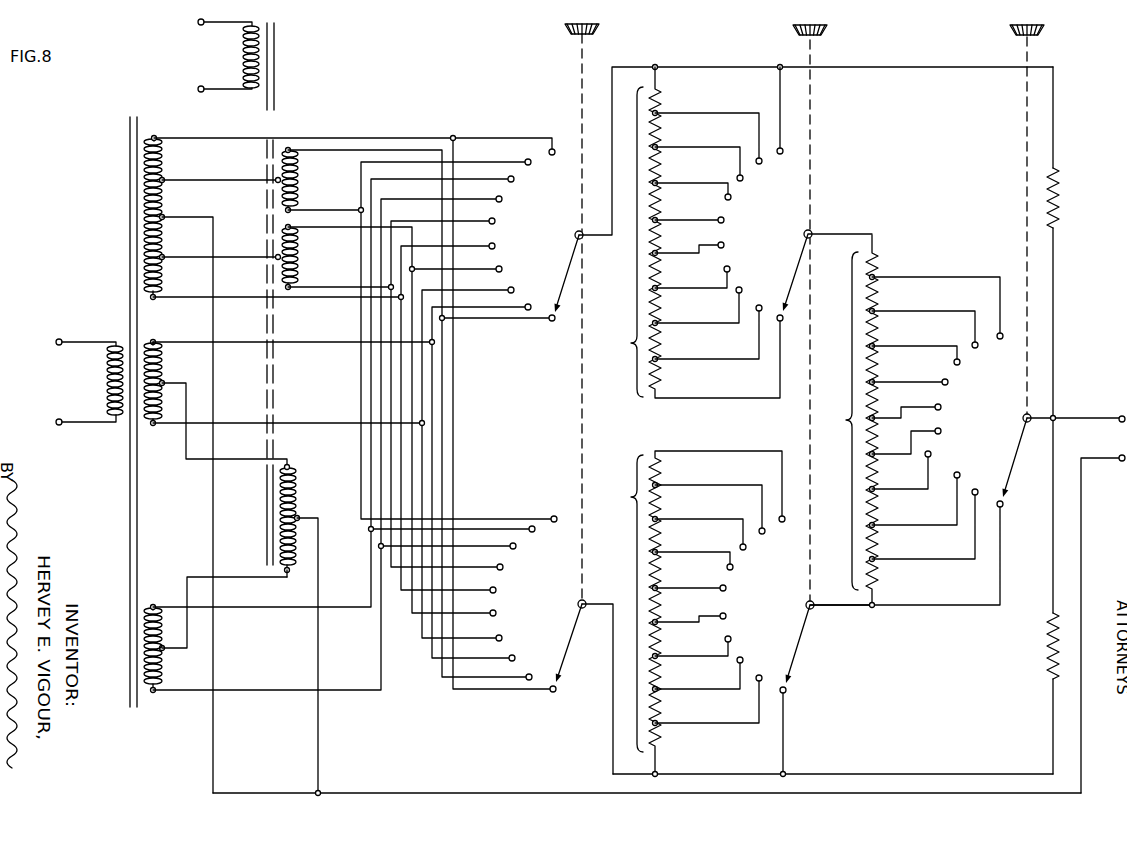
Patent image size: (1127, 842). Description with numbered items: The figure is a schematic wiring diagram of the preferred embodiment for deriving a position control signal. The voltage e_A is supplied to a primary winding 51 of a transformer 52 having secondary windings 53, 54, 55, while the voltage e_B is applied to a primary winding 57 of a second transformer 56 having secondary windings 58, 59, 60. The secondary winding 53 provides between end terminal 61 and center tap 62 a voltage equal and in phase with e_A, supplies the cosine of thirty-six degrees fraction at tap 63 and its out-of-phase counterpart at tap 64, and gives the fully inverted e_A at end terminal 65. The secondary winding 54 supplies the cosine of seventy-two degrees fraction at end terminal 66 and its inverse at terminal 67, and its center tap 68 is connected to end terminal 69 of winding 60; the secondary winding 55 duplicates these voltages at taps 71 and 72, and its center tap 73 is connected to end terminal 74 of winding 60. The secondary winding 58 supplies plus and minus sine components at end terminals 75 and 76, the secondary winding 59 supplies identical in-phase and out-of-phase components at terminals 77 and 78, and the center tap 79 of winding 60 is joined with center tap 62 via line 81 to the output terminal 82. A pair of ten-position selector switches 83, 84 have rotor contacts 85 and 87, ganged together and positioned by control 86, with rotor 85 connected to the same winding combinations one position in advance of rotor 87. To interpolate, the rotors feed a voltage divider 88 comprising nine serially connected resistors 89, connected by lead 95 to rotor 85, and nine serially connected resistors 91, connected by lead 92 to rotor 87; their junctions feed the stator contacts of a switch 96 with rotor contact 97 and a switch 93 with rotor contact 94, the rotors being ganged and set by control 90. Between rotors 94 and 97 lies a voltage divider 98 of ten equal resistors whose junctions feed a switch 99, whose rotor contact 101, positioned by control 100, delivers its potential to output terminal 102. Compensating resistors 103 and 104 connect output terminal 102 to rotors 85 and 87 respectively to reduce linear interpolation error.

The primary winding 51 is at (103, 398).
The transformer 52 is at (128, 152).
The secondary winding 53 is at (165, 194).
The secondary winding 54 is at (167, 368).
The secondary winding 55 is at (143, 707).
The second transformer 56 is at (277, 54).
The primary winding 57 is at (243, 46).
The secondary winding 58 is at (276, 180).
The secondary winding 59 is at (296, 259).
The secondary winding 60 is at (296, 491).
The end terminal 61 is at (154, 136).
The center tap 62 is at (165, 220).
The intermediate tap 63 is at (166, 180).
The intermediate tap 64 is at (165, 262).
The end terminal 65 is at (155, 299).
The end terminal 66 is at (154, 341).
The terminal 67 is at (153, 426).
The center tap 68 is at (165, 402).
The end terminal 69 is at (288, 466).
The tap 71 is at (153, 604).
The tap 72 is at (154, 693).
The center tap 73 is at (165, 655).
The end terminal 74 is at (287, 573).
The end terminal 75 is at (291, 156).
The end terminal 76 is at (292, 206).
The terminal 77 is at (292, 236).
The terminal 78 is at (292, 287).
The center tap 79 is at (299, 517).
The line 81 is at (362, 791).
The output terminal 82 is at (1118, 462).
The selector switch 83 is at (535, 228).
The selector switch 84 is at (536, 508).
The rotor contact 85 is at (564, 266).
The control 86 is at (563, 26).
The rotor contact 87 is at (571, 643).
The voltage divider 88 is at (733, 435).
The serially connected resistors 89 is at (692, 232).
The control 90 is at (799, 27).
The serially connected resistors 91 is at (698, 614).
The lead 92 is at (611, 756).
The switch 93 is at (764, 590).
The rotor contact 94 is at (802, 648).
The lead 95 is at (611, 81).
The switch 96 is at (767, 205).
The rotor contact 97 is at (803, 263).
The voltage divider 98 is at (905, 421).
The switch 99 is at (983, 406).
The control 100 is at (1016, 28).
The rotor contact 101 is at (1010, 468).
The output terminal 102 is at (1119, 415).
The resistor 103 is at (1064, 190).
The resistor 104 is at (1046, 648).